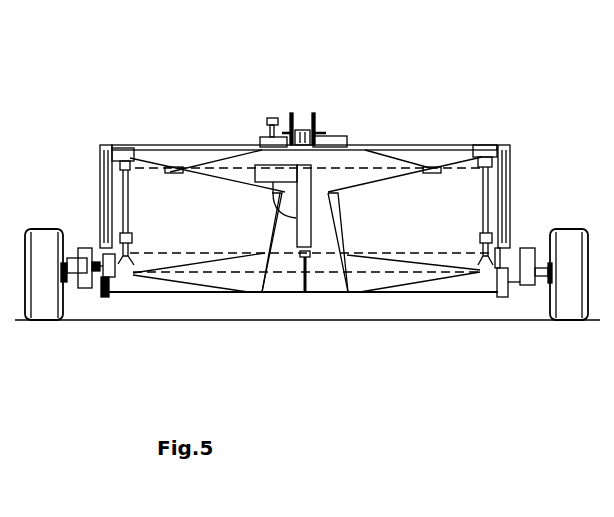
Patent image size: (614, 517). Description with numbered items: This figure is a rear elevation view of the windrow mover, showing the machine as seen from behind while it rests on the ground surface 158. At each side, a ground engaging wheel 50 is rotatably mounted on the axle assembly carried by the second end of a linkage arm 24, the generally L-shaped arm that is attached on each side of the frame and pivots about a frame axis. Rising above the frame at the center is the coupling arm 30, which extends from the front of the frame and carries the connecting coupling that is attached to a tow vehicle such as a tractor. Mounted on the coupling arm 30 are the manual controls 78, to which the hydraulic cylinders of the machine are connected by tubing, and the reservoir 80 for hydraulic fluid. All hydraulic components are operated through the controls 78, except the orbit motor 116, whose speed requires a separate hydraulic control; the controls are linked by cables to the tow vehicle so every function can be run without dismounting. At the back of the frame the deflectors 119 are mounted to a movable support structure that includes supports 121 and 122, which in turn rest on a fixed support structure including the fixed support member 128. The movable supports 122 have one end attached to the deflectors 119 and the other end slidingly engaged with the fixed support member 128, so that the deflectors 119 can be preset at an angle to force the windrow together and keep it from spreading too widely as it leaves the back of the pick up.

The linkage arm 24 is at (82, 248).
The coupling arm 30 is at (311, 179).
The ground engaging wheels 50 is at (42, 310).
The manual controls 78 is at (315, 122).
The reservoir 80 is at (240, 148).
The orbit motor 116 is at (85, 268).
The deflectors 119 is at (447, 227).
The movable support 121 is at (112, 208).
The movable supports 122 is at (328, 192).
The fixed support member 128 is at (263, 143).
The ground surface 158 is at (307, 310).